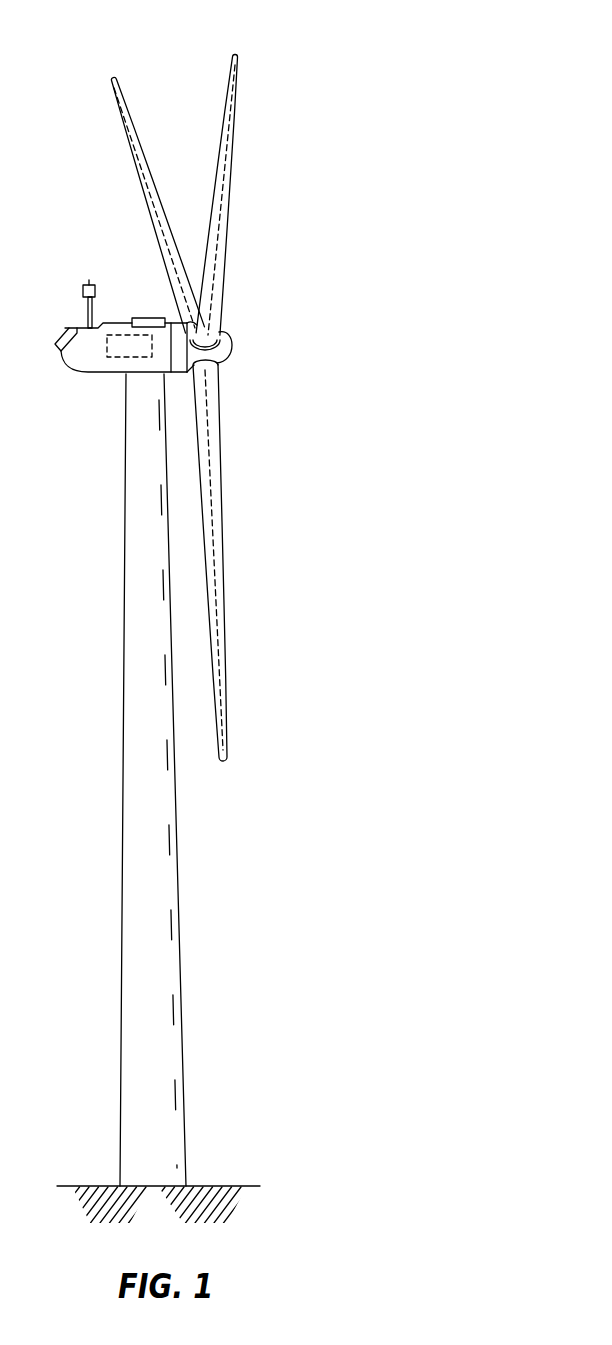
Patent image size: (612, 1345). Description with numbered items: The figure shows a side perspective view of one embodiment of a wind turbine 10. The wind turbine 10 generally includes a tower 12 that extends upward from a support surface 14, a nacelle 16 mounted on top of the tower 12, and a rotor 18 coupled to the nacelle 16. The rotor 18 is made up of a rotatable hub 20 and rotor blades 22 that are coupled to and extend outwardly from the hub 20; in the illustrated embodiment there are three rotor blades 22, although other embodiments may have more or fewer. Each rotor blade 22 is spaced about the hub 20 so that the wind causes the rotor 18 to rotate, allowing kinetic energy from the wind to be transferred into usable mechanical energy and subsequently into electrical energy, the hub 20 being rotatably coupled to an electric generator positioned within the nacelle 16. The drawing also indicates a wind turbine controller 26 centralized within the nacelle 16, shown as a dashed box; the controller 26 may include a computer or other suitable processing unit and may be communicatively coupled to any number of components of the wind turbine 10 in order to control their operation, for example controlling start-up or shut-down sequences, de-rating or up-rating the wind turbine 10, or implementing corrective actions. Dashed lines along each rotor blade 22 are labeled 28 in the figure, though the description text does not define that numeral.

The wind turbine 10 is at (370, 150).
The tower 12 is at (163, 865).
The support surface 14 is at (100, 1186).
The nacelle 16 is at (100, 376).
The rotor 18 is at (270, 285).
The rotatable hub 20 is at (232, 344).
The rotor blade 22 is at (220, 175).
The wind turbine controller 26 is at (113, 333).
The pitch axis 28 is at (150, 220).